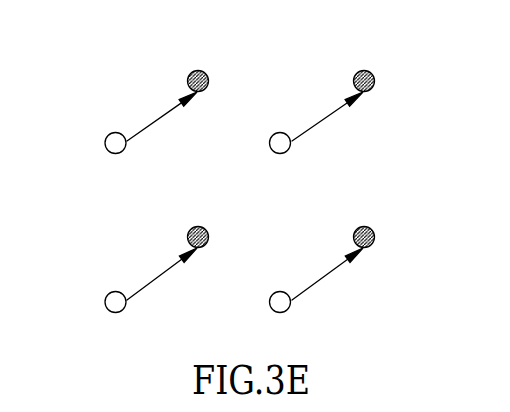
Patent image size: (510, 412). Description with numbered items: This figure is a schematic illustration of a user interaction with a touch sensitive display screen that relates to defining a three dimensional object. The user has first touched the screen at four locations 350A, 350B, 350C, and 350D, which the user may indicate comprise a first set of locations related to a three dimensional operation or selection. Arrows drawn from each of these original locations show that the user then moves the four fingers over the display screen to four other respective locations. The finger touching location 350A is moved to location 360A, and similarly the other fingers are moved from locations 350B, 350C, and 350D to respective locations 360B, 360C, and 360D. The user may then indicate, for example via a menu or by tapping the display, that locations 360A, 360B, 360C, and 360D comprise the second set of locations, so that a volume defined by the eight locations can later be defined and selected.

The location 350A is at (110, 133).
The location 360A is at (195, 70).
The location 350B is at (110, 292).
The location 360B is at (195, 226).
The location 350C is at (277, 292).
The location 360C is at (362, 226).
The location 350D is at (277, 133).
The location 360D is at (362, 70).